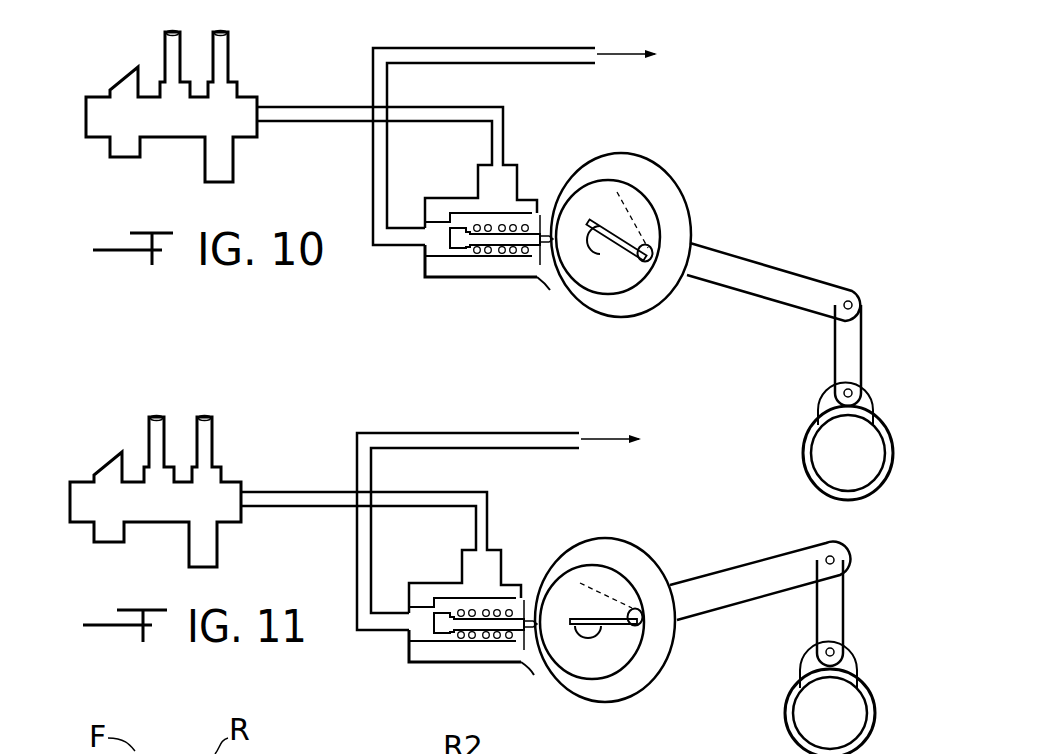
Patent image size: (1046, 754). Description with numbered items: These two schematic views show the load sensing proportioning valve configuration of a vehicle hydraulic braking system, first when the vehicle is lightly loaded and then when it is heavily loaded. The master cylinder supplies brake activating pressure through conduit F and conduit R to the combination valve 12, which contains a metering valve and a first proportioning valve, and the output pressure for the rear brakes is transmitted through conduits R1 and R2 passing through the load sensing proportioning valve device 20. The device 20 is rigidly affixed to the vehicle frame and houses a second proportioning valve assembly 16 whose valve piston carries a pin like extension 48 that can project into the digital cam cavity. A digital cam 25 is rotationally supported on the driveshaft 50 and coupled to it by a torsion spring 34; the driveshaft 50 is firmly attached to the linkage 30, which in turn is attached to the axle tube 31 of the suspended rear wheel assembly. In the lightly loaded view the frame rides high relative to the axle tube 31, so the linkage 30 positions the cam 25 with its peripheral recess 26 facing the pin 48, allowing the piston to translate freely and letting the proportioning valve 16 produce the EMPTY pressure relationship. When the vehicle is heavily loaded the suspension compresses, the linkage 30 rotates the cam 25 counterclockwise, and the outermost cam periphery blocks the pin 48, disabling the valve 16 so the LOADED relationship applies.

In FIG. 10, the combination valve 12 is at (179, 136).
In FIG. 11, the combination valve 12 is at (82, 522).
In FIG. 10, the conduit F is at (165, 48).
In FIG. 11, the conduit F is at (147, 432).
In FIG. 10, the conduit R is at (230, 47).
In FIG. 11, the conduit R is at (212, 433).
In FIG. 10, the conduit R1 is at (340, 106).
In FIG. 11, the conduit R1 is at (322, 491).
In FIG. 10, the conduit R2 is at (492, 46).
In FIG. 11, the conduit R2 is at (456, 431).
In FIG. 10, the second proportioning valve assembly 16 is at (466, 243).
In FIG. 11, the second proportioning valve assembly 16 is at (432, 627).
In FIG. 10, the pin like extension 48 is at (541, 235).
In FIG. 11, the pin like extension 48 is at (537, 607).
In FIG. 10, the load sensing proportioning valve device 20 is at (600, 153).
In FIG. 11, the load sensing proportioning valve device 20 is at (503, 581).
In FIG. 10, the digital cam 25 is at (626, 183).
In FIG. 11, the digital cam 25 is at (587, 570).
In FIG. 10, the torsion spring 34 is at (632, 236).
In FIG. 11, the torsion spring 34 is at (610, 577).
In FIG. 10, the driveshaft 50 is at (600, 254).
In FIG. 11, the driveshaft 50 is at (600, 640).
In FIG. 10, the peripheral recess 26 is at (550, 290).
In FIG. 11, the peripheral recess 26 is at (558, 655).
In FIG. 10, the linkage 30 is at (798, 272).
In FIG. 11, the linkage 30 is at (842, 546).
In FIG. 10, the axle tube 31 is at (806, 438).
In FIG. 11, the axle tube 31 is at (873, 702).